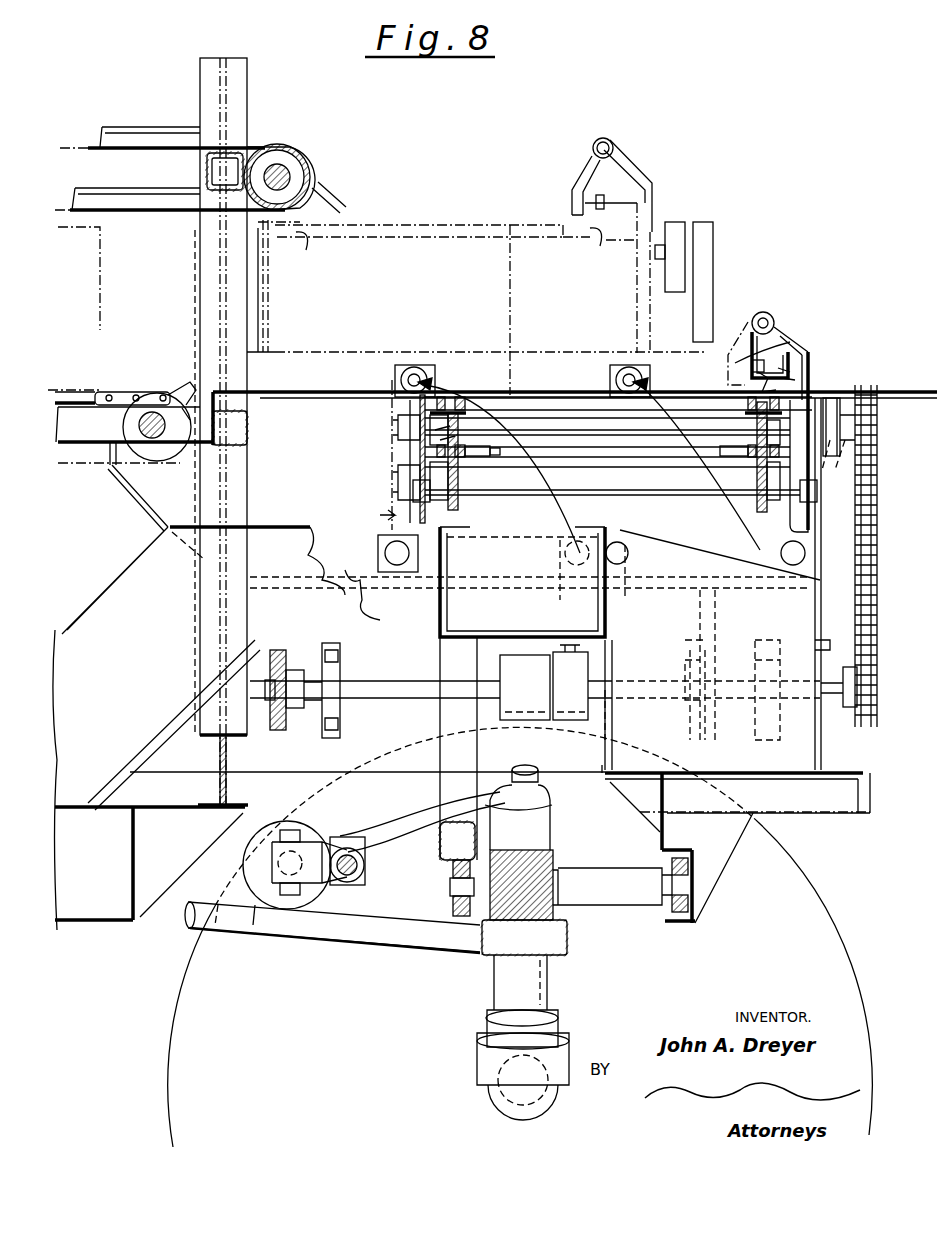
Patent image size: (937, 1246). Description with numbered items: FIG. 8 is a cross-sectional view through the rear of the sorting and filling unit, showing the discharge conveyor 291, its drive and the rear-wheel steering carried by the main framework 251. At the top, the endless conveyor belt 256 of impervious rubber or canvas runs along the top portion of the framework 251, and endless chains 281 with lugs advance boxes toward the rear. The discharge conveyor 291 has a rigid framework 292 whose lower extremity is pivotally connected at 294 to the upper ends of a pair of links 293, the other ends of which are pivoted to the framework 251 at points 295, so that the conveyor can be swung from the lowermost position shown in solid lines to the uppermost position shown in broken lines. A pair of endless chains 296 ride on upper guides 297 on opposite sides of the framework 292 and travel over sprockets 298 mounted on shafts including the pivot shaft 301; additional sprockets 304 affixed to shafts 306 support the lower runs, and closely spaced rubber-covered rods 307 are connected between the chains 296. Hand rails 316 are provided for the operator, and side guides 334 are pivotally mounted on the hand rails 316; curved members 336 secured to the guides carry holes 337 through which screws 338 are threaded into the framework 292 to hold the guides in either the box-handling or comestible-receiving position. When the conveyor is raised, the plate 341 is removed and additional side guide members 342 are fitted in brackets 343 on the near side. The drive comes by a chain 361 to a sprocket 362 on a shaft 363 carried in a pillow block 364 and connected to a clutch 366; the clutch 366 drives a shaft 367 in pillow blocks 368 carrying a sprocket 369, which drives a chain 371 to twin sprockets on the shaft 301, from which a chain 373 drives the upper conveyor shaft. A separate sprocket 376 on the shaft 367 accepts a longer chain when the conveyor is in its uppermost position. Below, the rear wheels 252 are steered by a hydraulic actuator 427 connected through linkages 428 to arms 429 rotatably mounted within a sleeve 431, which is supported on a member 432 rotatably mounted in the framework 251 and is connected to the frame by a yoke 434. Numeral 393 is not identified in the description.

The framework 251 is at (298, 520).
The rear wheels 252 is at (170, 1010).
The conveyor belt 256 is at (160, 108).
The endless chains 281 is at (110, 395).
The discharge conveyor 291 is at (345, 410).
The rigid framework 292 is at (555, 353).
The links 293 is at (420, 448).
The pivotal connection 294 is at (400, 380).
The pivot points 295 is at (420, 555).
The endless chains 296 is at (495, 440).
The upper guides 297 is at (306, 258).
The sprockets 298 is at (790, 425).
The shaft 301 is at (686, 300).
The sprockets 304 is at (455, 505).
The shafts 306 is at (548, 478).
The rubber-covered rods 307 is at (540, 225).
The hand rails 316 is at (596, 146).
The side guides 334 is at (583, 168).
The curved members 336 is at (735, 368).
The holes 337 is at (810, 362).
The screws 338 is at (755, 385).
The plate 341 is at (300, 392).
The side guide members 342 is at (325, 198).
The brackets 343 is at (262, 262).
The chain 361 is at (272, 730).
The sprocket 362 is at (312, 710).
The shaft 363 is at (420, 692).
The pillow block 364 is at (345, 672).
The clutch 366 is at (538, 693).
The shaft 367 is at (618, 740).
The pillow blocks 368 is at (766, 650).
The sprocket 369 is at (853, 710).
The chain 371 is at (855, 632).
The chain 373 is at (672, 222).
The sprocket 376 is at (715, 730).
The sprocket 393 is at (847, 410).
The hydraulic actuator 427 is at (318, 845).
The linkages 428 is at (358, 880).
The arms 429 is at (410, 825).
The sleeve 431 is at (500, 978).
The member 432 is at (605, 900).
The yoke 434 is at (255, 925).